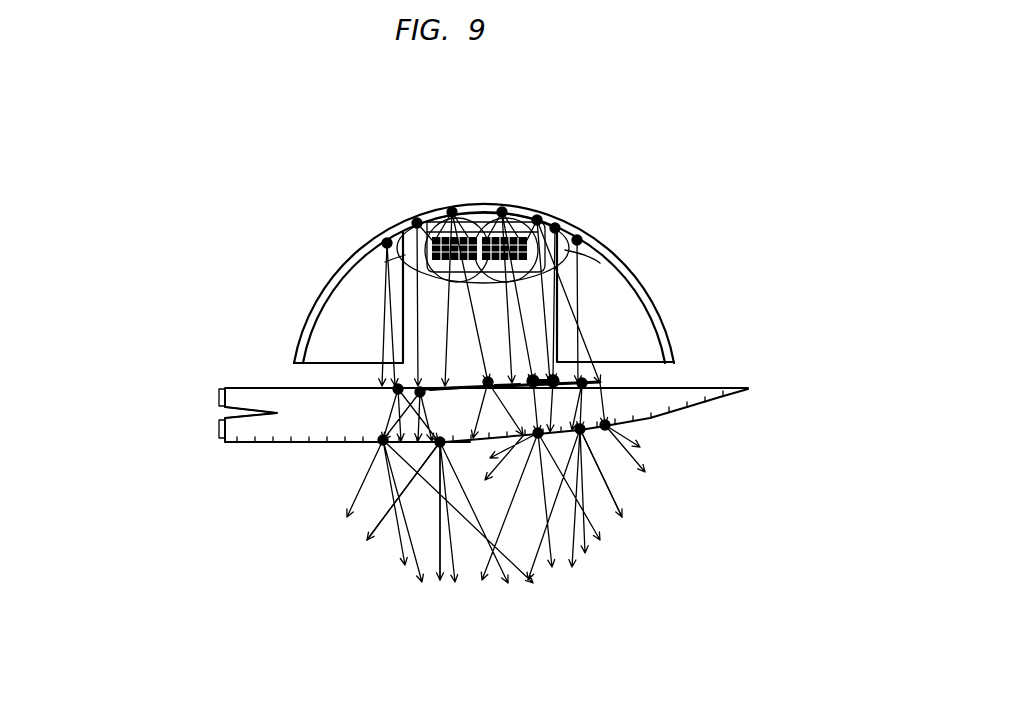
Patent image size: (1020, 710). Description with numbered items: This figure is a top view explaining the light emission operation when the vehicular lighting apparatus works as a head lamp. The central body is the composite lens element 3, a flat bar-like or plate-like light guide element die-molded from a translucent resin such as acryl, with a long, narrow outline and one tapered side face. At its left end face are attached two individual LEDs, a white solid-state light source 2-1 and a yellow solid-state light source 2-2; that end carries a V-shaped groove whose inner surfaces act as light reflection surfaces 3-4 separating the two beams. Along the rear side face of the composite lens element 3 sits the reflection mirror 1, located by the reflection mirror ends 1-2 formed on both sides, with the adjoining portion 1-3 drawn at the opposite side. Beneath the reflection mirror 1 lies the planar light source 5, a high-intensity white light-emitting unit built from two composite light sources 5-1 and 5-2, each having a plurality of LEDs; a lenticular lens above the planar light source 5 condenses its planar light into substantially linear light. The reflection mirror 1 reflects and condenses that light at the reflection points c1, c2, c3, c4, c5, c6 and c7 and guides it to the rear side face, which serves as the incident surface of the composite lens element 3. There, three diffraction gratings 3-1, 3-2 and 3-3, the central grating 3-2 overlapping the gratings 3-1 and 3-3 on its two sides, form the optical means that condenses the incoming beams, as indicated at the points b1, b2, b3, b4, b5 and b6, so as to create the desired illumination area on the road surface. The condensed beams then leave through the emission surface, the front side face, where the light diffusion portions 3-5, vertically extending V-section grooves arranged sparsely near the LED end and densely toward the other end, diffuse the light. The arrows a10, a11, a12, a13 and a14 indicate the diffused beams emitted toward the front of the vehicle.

The reflection mirror 1 is at (465, 208).
The reflection mirror end 1-2 is at (632, 333).
The dome left wall portion 1-3 is at (347, 327).
The solid-state light source 2-1 is at (221, 430).
The solid-state light source 2-2 is at (222, 395).
The composite lens element 3 is at (740, 388).
The diffraction grating 3-1 is at (477, 428).
The diffraction grating 3-2 is at (450, 376).
The diffraction grating 3-3 is at (505, 382).
The light reflection surface 3-4 is at (237, 412).
The light diffusion portion 3-5 is at (273, 443).
The planar light source 5 is at (486, 210).
The composite light source 5-1 is at (438, 210).
The composite light source 5-2 is at (534, 210).
The reflection point c1 is at (385, 240).
The reflection point c2 is at (416, 220).
The reflection point c3 is at (452, 208).
The reflection point c4 is at (503, 208).
The reflection point c5 is at (540, 216).
The reflection point c6 is at (560, 226).
The dome point c7 is at (583, 241).
The condensing point b1 is at (385, 398).
The condensing point b2 is at (394, 388).
The condensing point b3 is at (501, 344).
The condensing point b4 is at (521, 391).
The condensing point b5 is at (556, 378).
The condensing point b6 is at (600, 380).
The emitted light ray a10 is at (383, 440).
The emitted light ray a11 is at (440, 442).
The emitted light ray a12 is at (489, 540).
The emitted light ray a13 is at (523, 437).
The emitted light ray a14 is at (627, 440).